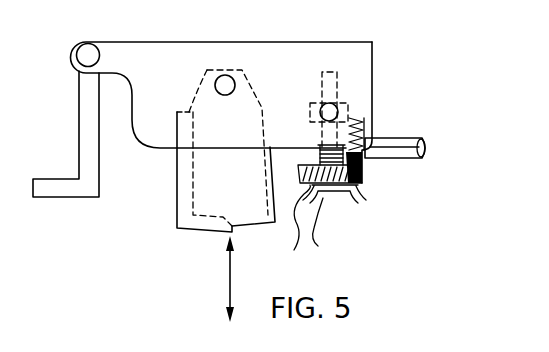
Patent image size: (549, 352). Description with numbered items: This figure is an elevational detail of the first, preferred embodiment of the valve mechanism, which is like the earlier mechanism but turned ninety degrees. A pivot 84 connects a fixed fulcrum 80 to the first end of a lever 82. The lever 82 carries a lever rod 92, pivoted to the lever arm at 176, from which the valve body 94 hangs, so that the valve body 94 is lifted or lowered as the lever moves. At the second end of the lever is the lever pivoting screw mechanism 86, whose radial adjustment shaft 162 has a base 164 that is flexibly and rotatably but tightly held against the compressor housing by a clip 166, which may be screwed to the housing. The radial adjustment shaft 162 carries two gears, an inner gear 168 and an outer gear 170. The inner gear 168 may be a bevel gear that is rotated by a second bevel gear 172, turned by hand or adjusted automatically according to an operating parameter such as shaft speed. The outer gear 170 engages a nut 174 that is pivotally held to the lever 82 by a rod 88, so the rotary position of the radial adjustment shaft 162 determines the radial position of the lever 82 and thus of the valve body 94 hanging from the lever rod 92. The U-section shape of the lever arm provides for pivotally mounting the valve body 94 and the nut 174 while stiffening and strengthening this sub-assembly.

The fulcrum 80 is at (93, 150).
The lever 82 is at (149, 42).
The pivot 84 is at (89, 53).
The lever pivoting screw mechanism 86 is at (390, 92).
The rod 88 is at (330, 111).
The lever rod 92 is at (224, 82).
The valve body 94 is at (178, 187).
The radial adjustment shaft 162 is at (356, 185).
The base 164 is at (339, 192).
The clip 166 is at (335, 228).
The inner gear 168 is at (284, 222).
The outer gear 170 is at (364, 160).
The second bevel gear 172 is at (375, 130).
The nut 174 is at (348, 110).
The pivot 176 is at (232, 82).